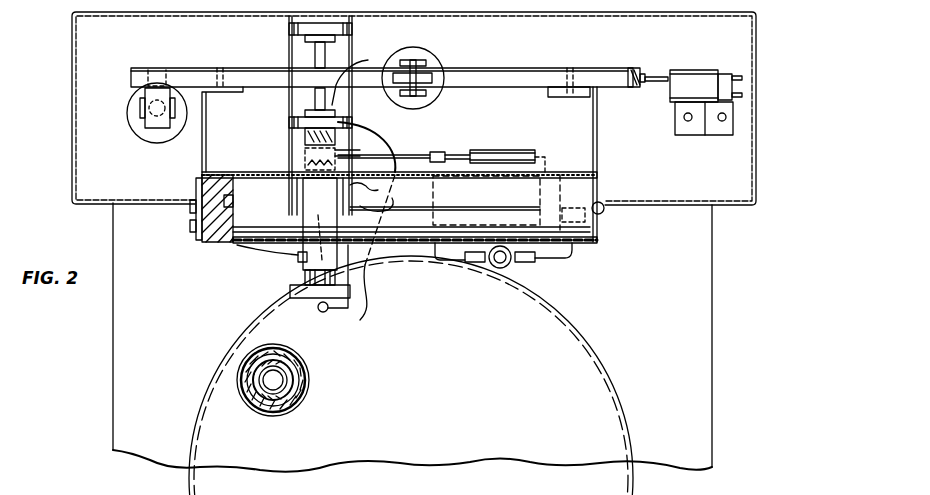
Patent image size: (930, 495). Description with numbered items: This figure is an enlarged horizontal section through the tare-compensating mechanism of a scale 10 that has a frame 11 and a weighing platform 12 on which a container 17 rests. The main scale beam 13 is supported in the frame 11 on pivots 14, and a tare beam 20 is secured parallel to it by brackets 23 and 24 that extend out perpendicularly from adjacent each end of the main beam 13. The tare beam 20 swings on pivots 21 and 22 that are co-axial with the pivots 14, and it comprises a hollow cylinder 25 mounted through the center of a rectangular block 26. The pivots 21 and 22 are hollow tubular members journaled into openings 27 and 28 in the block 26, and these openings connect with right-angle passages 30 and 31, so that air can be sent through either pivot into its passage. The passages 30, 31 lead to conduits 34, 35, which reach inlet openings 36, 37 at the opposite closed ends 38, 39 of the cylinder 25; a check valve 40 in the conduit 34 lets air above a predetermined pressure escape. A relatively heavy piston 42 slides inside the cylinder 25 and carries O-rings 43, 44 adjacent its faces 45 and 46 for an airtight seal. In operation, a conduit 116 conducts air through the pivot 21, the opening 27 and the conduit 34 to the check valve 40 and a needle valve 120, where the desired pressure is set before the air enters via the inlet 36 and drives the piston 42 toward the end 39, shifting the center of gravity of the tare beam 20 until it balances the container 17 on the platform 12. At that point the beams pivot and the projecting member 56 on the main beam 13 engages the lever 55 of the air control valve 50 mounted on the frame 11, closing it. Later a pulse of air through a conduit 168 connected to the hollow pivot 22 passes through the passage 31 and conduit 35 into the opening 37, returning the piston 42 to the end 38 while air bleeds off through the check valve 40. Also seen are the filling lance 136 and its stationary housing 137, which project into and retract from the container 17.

The scale 10 is at (768, 50).
The frame 11 is at (757, 152).
The weighing platform 12 is at (705, 308).
The main scale beam 13 is at (543, 68).
The pivots 14 is at (322, 45).
The container 17 is at (627, 415).
The tare beam 20 is at (417, 252).
The pivot 21 is at (303, 147).
The pivot 22 is at (290, 290).
The bracket 23 is at (198, 147).
The bracket 24 is at (599, 140).
The hollow cylinder 25 is at (508, 209).
The rectangular block 26 is at (381, 140).
The opening 27 is at (303, 157).
The opening 28 is at (305, 268).
The right-angle passage 30 is at (303, 166).
The right-angle passage 31 is at (324, 237).
The conduit 34 is at (446, 142).
The conduit 35 is at (237, 247).
The inlet opening 36 is at (600, 226).
The inlet opening 37 is at (240, 196).
The closed end 38 is at (588, 186).
The closed end 39 is at (200, 222).
The check valve 40 is at (500, 150).
The piston 42 is at (320, 224).
The O-ring 43 is at (300, 185).
The O-ring 44 is at (395, 175).
The face 45 is at (298, 200).
The face 46 is at (391, 212).
The air control valve 50 is at (693, 78).
The lever 55 is at (658, 76).
The projecting member 56 is at (640, 74).
The conduit 116 is at (352, 118).
The needle valve 120 is at (500, 265).
The lance 136 is at (282, 368).
The housing 137 is at (308, 388).
The conduit 168 is at (361, 320).